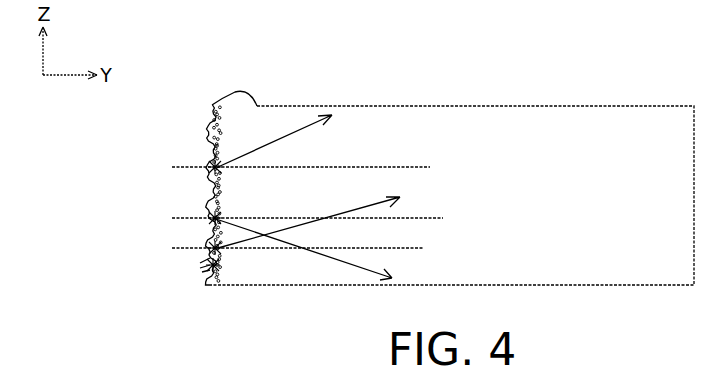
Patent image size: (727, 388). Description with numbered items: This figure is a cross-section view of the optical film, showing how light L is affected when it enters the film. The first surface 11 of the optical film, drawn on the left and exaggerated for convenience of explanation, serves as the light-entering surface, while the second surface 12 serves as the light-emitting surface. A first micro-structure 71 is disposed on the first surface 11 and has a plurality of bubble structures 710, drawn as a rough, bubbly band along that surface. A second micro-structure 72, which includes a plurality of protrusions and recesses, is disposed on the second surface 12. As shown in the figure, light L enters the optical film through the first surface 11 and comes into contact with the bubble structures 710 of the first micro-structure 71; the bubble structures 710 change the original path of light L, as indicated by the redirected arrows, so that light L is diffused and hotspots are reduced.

The second surface 12 is at (522, 106).
The second micro-structure 72 is at (235, 100).
The first micro-structure 71 is at (207, 138).
The bubble structures 710 is at (206, 180).
The light L is at (298, 197).
The first surface 11 is at (203, 265).